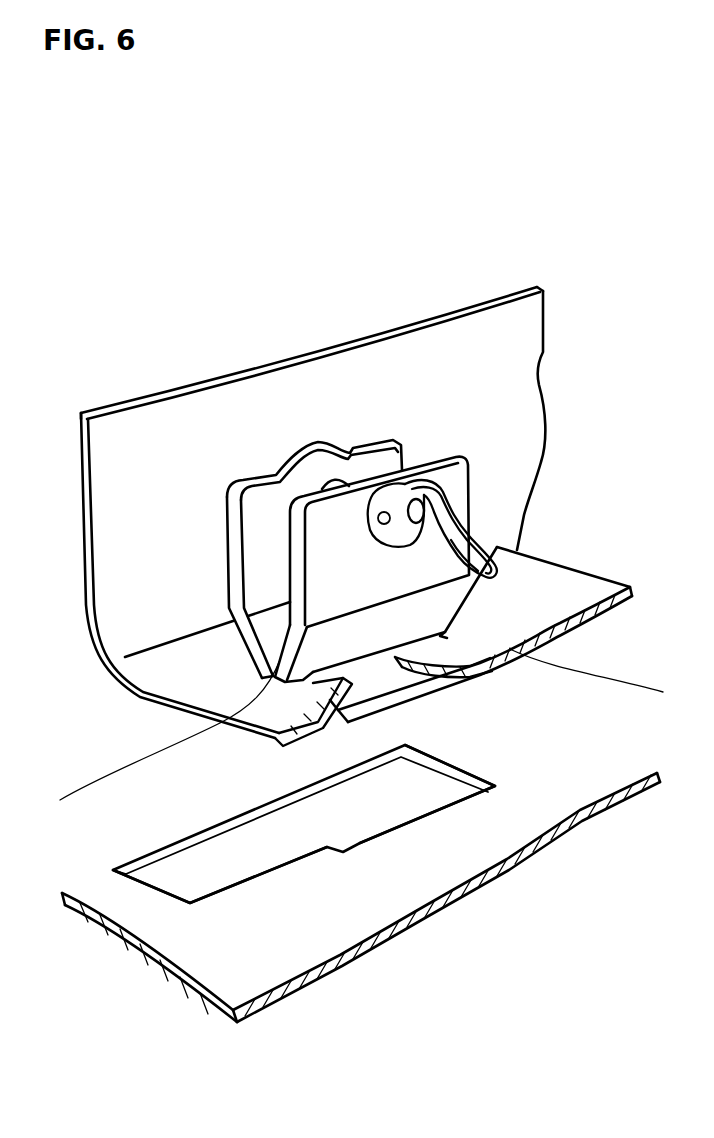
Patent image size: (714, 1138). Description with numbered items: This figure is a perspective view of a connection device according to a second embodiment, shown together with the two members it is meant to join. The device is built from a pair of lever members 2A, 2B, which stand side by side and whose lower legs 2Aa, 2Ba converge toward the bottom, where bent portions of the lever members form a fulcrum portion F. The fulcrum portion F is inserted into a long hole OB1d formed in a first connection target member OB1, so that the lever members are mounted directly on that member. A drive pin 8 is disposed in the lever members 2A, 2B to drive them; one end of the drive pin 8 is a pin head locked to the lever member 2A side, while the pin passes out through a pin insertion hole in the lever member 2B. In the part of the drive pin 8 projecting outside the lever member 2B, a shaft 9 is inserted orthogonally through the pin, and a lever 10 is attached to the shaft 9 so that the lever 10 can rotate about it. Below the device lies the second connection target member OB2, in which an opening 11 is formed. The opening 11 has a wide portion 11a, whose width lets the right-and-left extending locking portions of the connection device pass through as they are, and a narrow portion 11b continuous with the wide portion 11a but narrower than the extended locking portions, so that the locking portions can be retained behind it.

The lever member 2A is at (279, 504).
The leg of first contact member 2Aa is at (257, 523).
The lever member 2B is at (377, 535).
The leg of second contact member 2Ba is at (318, 570).
The drive pin 8 is at (420, 512).
The shaft 9 is at (383, 512).
The lever 10 is at (520, 548).
The connection target member OB1 is at (102, 467).
The long hole OB1d is at (408, 649).
The fulcrum portion F is at (224, 726).
The connection target member OB2 is at (583, 807).
The opening 11 is at (312, 835).
The wide portion 11a is at (363, 828).
The narrow portion 11b is at (170, 865).